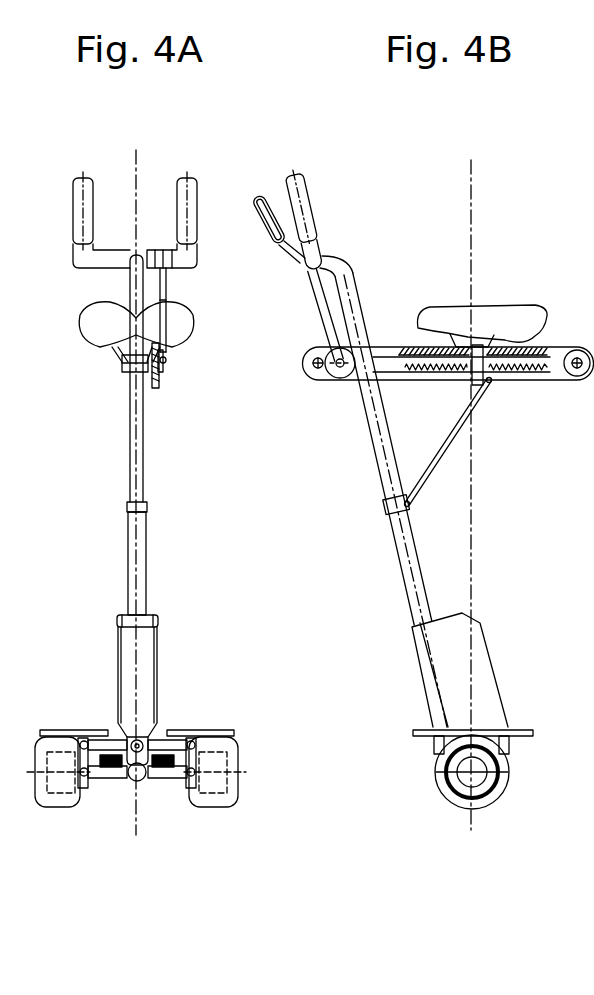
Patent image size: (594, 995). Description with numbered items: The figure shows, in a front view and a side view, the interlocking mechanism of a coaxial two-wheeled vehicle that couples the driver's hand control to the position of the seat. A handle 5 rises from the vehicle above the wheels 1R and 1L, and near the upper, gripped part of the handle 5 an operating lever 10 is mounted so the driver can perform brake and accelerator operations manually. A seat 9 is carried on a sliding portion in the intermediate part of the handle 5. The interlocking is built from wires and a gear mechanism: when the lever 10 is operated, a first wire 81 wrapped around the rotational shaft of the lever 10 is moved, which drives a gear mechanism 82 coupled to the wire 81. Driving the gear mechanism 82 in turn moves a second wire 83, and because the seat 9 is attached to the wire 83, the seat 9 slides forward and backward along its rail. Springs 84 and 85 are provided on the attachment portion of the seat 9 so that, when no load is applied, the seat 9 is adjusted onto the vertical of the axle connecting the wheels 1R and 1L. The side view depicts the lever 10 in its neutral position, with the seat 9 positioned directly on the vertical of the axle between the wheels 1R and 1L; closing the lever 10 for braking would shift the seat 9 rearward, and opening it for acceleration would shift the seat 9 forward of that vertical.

In FIG. 4A, the operating lever 10 is at (177, 214).
In FIG. 4B, the operating lever 10 is at (263, 231).
In FIG. 4A, the first wire 81 is at (162, 283).
In FIG. 4B, the first wire 81 is at (314, 300).
In FIG. 4A, the gear mechanism 82 is at (160, 366).
In FIG. 4B, the gear mechanism 82 is at (333, 380).
In FIG. 4A, the seat 9 is at (185, 330).
In FIG. 4B, the seat 9 is at (515, 318).
In FIG. 4A, the handle 5 is at (148, 447).
In FIG. 4B, the handle 5 is at (410, 535).
In FIG. 4B, the second wire 83 is at (402, 347).
In FIG. 4B, the spring 84 is at (437, 373).
In FIG. 4B, the spring 85 is at (530, 373).
In FIG. 4A, the right wheel 1R is at (60, 800).
In FIG. 4A, the left wheel 1L is at (215, 800).
In FIG. 4B, the left wheel 1L is at (492, 795).